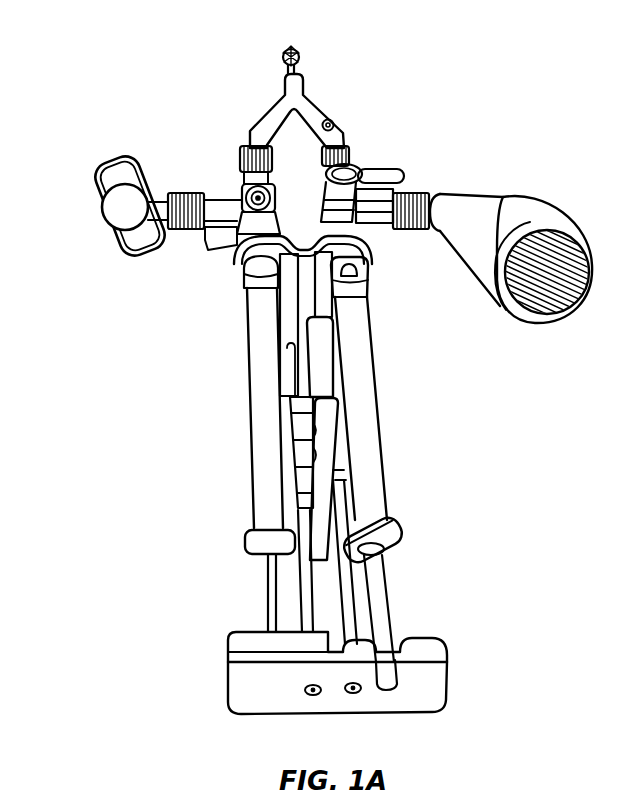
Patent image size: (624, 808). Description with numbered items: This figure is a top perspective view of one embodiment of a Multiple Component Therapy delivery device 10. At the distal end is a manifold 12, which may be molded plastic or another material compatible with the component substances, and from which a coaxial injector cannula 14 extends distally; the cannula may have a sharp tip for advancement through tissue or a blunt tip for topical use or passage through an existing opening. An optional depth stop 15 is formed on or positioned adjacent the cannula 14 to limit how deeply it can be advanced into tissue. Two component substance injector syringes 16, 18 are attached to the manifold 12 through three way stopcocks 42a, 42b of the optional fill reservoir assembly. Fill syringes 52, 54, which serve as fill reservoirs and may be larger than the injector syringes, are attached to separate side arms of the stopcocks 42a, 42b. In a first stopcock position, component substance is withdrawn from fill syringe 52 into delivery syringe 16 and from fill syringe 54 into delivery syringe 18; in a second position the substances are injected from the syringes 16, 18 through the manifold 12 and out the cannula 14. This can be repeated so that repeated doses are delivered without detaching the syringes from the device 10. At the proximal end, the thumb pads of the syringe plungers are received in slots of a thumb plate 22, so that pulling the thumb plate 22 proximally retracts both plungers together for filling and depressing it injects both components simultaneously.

The Multiple Component Therapy delivery device 10 is at (470, 52).
The manifold 12 is at (320, 108).
The coaxial injector cannula 14 is at (294, 42).
The depth stop 15 is at (278, 54).
The component substance injector syringe 16 is at (382, 422).
The component substance injector syringe 18 is at (250, 420).
The thumb plate 22 is at (448, 680).
The three way stopcock 42a is at (372, 168).
The three way stopcock 42b is at (237, 192).
The fill syringe 52 is at (463, 193).
The fill syringe 54 is at (97, 206).